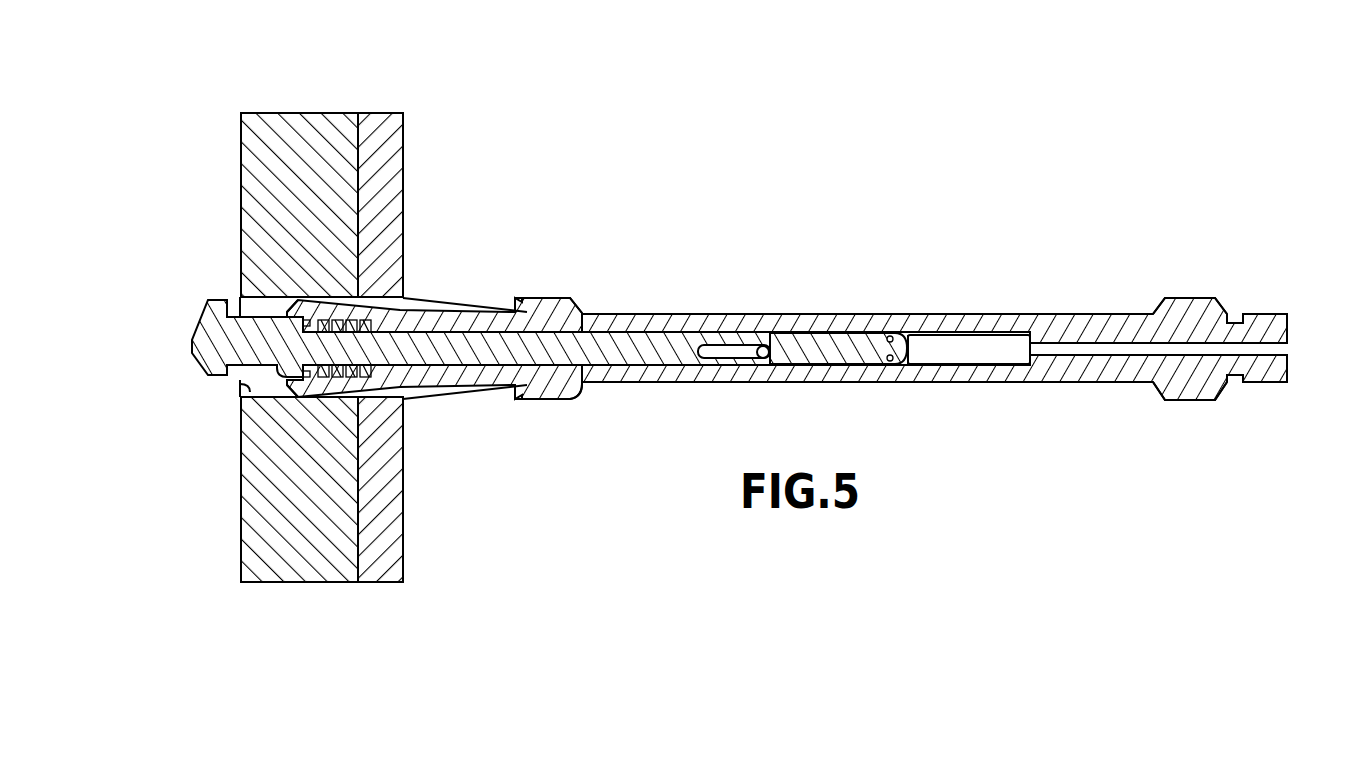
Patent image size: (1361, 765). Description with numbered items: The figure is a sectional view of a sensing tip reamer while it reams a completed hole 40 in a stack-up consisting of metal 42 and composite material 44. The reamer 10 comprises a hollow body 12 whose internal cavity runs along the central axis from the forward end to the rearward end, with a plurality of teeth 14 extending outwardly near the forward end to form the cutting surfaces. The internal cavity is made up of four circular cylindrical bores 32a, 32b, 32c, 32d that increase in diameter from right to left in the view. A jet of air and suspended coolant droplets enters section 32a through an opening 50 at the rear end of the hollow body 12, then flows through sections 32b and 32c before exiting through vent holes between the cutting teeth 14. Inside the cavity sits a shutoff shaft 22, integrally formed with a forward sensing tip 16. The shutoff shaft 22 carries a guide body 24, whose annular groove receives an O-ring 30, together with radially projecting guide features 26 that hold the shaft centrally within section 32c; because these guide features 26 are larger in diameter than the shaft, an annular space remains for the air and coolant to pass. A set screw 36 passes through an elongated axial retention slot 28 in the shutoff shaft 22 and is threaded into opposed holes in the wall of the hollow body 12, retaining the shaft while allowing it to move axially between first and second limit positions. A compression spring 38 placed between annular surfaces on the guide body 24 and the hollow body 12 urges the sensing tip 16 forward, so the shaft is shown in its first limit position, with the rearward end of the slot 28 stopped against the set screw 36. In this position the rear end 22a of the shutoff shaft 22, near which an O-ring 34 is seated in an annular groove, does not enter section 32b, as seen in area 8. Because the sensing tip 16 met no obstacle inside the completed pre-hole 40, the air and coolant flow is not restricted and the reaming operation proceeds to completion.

The area 8 is at (907, 308).
The reamer 10 is at (745, 337).
The hollow body 12 is at (727, 314).
The teeth 14 is at (457, 315).
The sensing tip 16 is at (192, 353).
The shutoff shaft 22 is at (667, 314).
The rear end of shutoff shaft 22a is at (910, 350).
The guide body 24 is at (295, 385).
The guide features 26 is at (790, 364).
The retention slot 28 is at (737, 358).
The O-ring 30 is at (287, 297).
The section of internal cavity 32a is at (1143, 347).
The section of internal cavity 32b is at (985, 365).
The section of internal cavity 32c is at (530, 352).
The section of internal cavity 32d is at (370, 392).
The O-ring 34 is at (888, 337).
The set screw 36 is at (775, 314).
The compression spring 38 is at (360, 297).
The completed hole 40 is at (240, 384).
The metal 42 is at (380, 113).
The composite material 44 is at (300, 113).
The opening 50 is at (1290, 348).